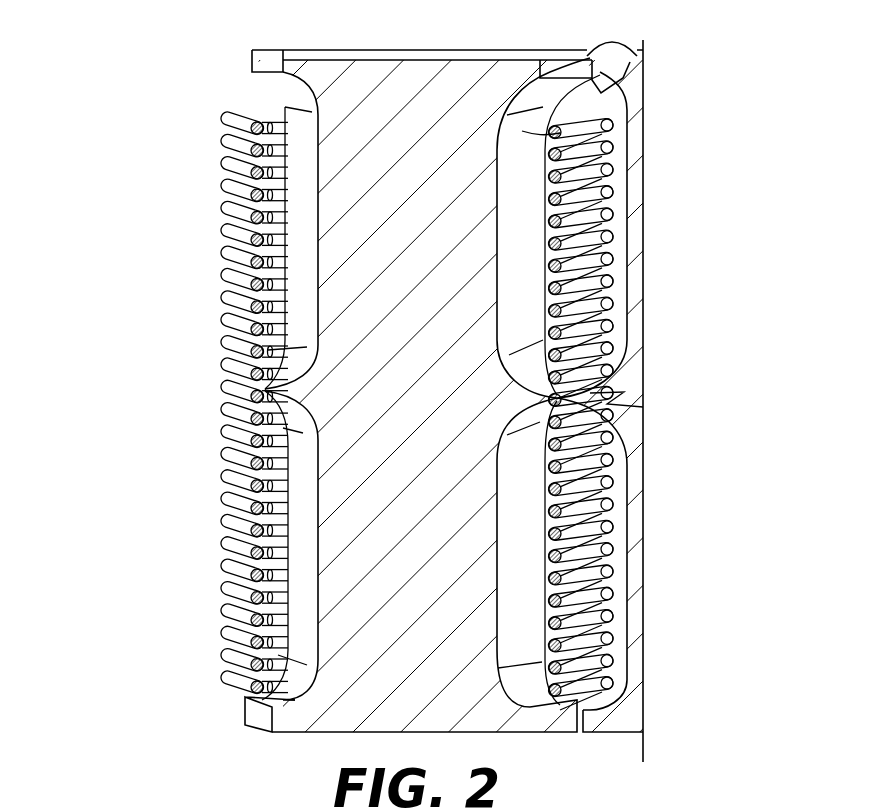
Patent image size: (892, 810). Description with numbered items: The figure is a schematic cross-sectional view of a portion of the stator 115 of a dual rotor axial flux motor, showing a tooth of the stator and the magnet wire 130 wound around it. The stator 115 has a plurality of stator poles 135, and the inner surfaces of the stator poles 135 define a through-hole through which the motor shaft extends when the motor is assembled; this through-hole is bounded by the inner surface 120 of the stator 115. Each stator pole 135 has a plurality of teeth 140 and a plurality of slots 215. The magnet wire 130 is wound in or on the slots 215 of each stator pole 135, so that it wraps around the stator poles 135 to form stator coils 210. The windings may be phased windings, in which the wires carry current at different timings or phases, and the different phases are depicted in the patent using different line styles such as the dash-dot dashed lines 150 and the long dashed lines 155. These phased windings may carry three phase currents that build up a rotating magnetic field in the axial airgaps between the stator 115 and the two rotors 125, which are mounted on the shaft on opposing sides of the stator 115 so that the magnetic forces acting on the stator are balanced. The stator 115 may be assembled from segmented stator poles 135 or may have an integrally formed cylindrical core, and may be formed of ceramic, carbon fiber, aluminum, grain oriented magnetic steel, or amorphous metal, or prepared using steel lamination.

The stator 115 is at (628, 430).
The inner surface 120 is at (522, 132).
The rotors 125 is at (743, 800).
The magnet wire 130 is at (603, 213).
The stator poles 135 is at (480, 90).
The teeth 140 is at (283, 52).
The dash-dot dashed lines 150 is at (100, 800).
The long dashed lines 155 is at (211, 800).
The stator coils 210 is at (669, 414).
The slots 215 is at (302, 500).